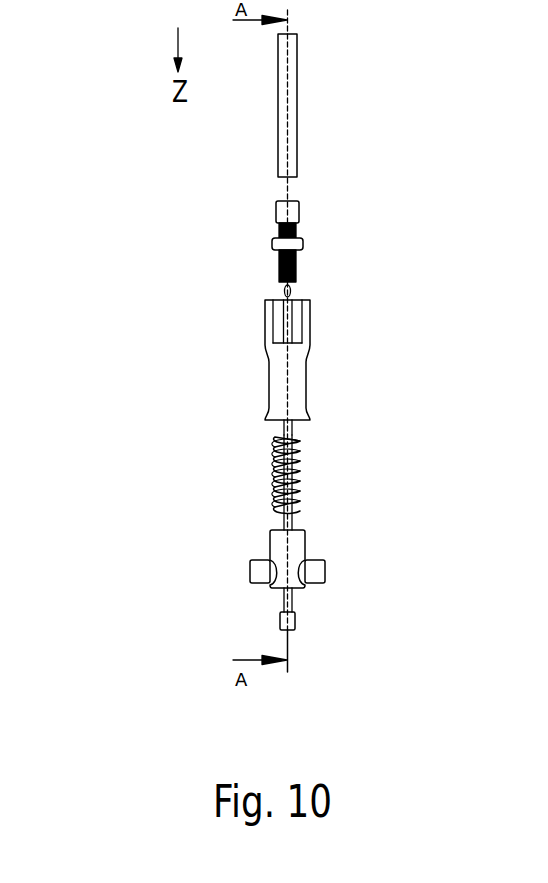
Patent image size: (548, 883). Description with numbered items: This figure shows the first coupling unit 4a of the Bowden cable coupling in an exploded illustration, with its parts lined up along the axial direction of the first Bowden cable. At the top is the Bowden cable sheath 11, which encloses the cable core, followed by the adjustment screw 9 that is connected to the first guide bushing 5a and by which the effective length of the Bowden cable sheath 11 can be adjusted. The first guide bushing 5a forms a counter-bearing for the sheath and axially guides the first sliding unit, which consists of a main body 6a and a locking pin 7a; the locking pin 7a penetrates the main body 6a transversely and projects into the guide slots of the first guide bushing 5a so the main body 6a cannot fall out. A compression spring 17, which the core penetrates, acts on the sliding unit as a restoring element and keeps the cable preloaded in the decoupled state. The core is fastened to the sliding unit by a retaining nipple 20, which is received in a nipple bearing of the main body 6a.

The first coupling unit 4a is at (116, 390).
The Bowden cable sheath 11 is at (290, 161).
The adjustment screw 9 is at (292, 213).
The first guide bushing 5a is at (277, 367).
The compression spring 17 is at (287, 482).
The main body 6a is at (292, 547).
The locking pin 7a is at (317, 577).
The retaining nipple 20 is at (292, 622).